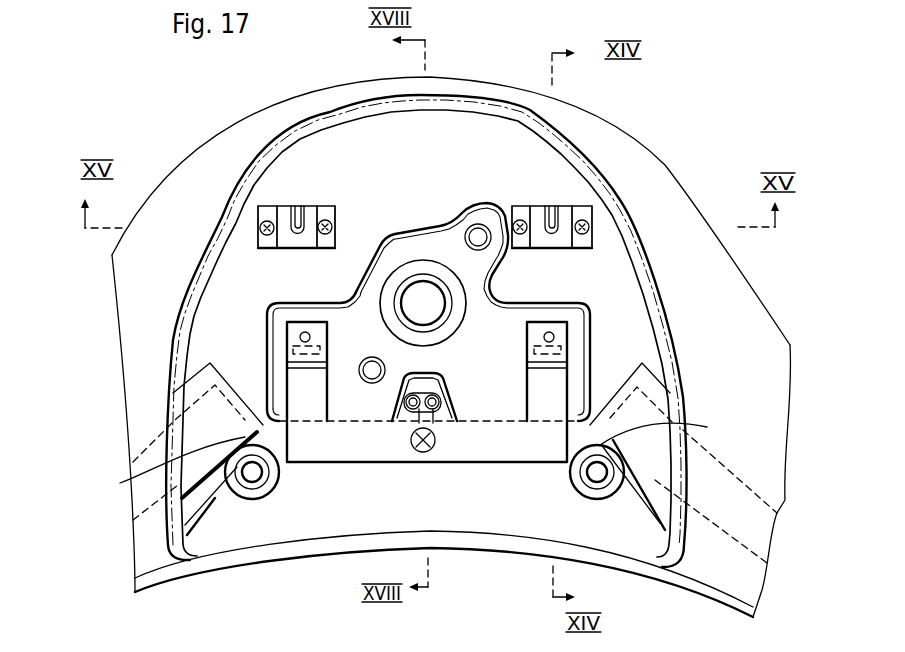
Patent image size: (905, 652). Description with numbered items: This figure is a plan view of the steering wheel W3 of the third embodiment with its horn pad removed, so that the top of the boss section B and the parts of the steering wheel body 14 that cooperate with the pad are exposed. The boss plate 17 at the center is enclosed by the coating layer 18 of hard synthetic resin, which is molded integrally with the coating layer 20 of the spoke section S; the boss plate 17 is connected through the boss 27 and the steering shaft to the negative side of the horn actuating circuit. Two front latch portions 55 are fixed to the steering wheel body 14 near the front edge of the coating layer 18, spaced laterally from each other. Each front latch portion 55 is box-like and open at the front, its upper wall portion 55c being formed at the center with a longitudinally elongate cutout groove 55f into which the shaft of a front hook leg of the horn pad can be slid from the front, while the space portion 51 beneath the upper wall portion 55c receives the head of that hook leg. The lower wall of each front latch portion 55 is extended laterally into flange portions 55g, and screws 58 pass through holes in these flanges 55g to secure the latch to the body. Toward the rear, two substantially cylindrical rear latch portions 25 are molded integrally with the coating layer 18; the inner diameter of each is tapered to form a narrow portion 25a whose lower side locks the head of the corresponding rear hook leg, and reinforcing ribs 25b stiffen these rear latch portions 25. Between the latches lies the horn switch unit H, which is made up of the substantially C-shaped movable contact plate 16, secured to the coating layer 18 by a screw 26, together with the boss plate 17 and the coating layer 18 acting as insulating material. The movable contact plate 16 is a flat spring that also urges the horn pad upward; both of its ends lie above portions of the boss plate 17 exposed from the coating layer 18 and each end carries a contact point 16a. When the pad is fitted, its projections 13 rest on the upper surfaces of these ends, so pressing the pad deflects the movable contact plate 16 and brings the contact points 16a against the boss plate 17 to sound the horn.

The projection 13 is at (302, 348).
The steering wheel body 14 is at (325, 528).
The movable contact plate 16 is at (340, 452).
The contact point 16a is at (300, 337).
The boss plate 17 is at (490, 398).
The coating layer 18 is at (751, 392).
The coating layer of the spoke section 20 is at (140, 380).
The rear latch portion 25 is at (250, 499).
The narrow portion 25a is at (265, 483).
The reinforcing rib 25b is at (137, 481).
The screw 26 is at (423, 453).
The boss 27 is at (450, 330).
The space portion 51 is at (315, 206).
The front latch portion 55 is at (320, 182).
The upper wall portion 55c is at (310, 241).
The cutout groove 55f is at (298, 222).
The flange portion 55g is at (258, 213).
The screw 58 is at (332, 218).
The boss section B is at (505, 67).
The horn switch unit H is at (528, 490).
The spoke section S is at (157, 557).
The steering wheel W3 is at (686, 162).